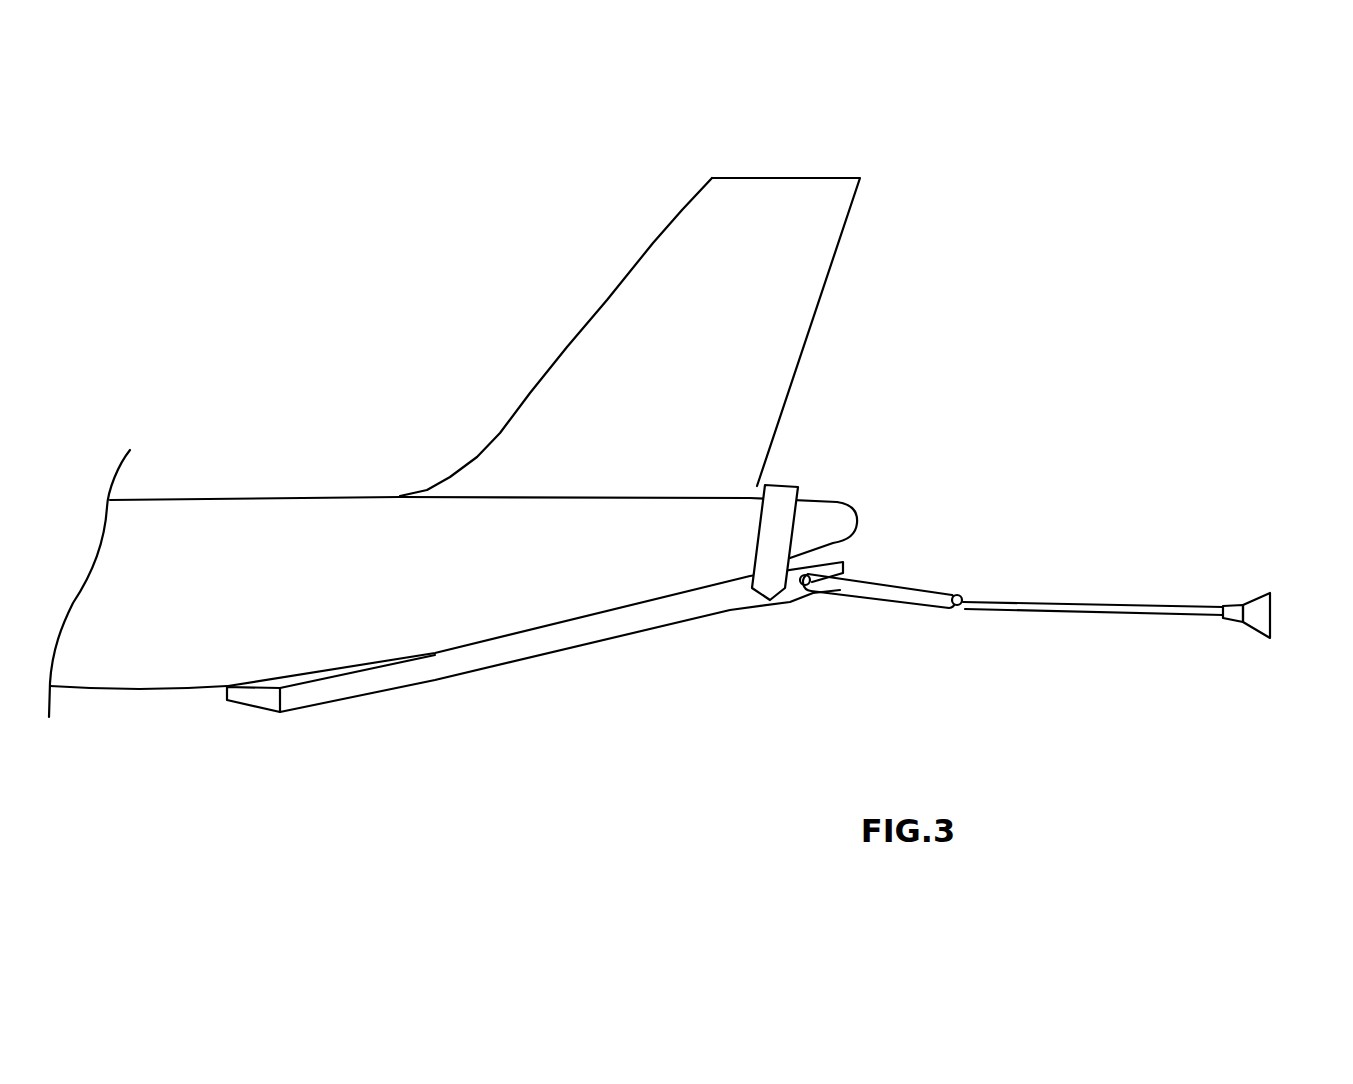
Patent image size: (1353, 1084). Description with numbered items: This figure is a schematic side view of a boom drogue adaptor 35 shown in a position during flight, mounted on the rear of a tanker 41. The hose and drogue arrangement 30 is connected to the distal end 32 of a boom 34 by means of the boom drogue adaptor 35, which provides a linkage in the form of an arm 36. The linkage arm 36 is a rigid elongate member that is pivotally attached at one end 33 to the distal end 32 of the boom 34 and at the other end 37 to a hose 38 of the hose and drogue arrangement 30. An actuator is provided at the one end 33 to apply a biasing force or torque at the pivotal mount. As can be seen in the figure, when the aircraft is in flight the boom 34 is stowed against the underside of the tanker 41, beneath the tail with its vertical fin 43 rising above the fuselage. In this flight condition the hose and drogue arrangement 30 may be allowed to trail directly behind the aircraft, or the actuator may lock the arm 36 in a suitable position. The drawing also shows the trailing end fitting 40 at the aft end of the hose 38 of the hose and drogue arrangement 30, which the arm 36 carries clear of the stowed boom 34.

The hose and drogue arrangement 30 is at (1062, 600).
The distal end of the boom 32 is at (788, 598).
The one end of the linkage arm 33 is at (805, 586).
The boom 34 is at (498, 655).
The boom drogue adaptor 35 is at (919, 560).
The linkage arm 36 is at (908, 594).
The other end of the linkage arm 37 is at (960, 594).
The hose 38 is at (1162, 607).
The nozzle 40 is at (1260, 615).
The tanker 41 is at (218, 602).
The vertical stabilizer 43 is at (660, 528).